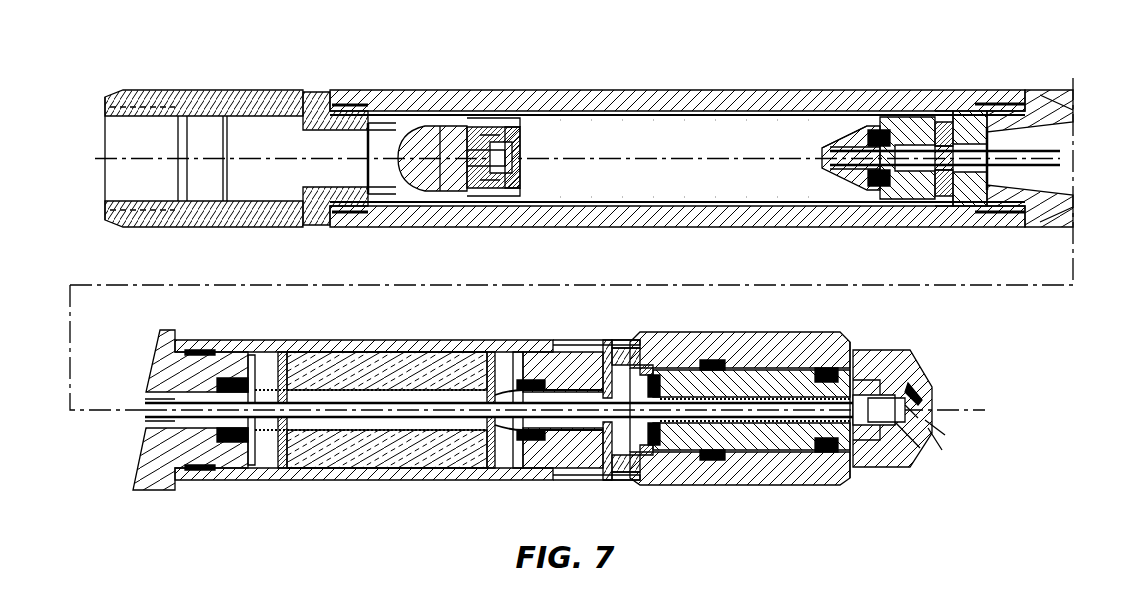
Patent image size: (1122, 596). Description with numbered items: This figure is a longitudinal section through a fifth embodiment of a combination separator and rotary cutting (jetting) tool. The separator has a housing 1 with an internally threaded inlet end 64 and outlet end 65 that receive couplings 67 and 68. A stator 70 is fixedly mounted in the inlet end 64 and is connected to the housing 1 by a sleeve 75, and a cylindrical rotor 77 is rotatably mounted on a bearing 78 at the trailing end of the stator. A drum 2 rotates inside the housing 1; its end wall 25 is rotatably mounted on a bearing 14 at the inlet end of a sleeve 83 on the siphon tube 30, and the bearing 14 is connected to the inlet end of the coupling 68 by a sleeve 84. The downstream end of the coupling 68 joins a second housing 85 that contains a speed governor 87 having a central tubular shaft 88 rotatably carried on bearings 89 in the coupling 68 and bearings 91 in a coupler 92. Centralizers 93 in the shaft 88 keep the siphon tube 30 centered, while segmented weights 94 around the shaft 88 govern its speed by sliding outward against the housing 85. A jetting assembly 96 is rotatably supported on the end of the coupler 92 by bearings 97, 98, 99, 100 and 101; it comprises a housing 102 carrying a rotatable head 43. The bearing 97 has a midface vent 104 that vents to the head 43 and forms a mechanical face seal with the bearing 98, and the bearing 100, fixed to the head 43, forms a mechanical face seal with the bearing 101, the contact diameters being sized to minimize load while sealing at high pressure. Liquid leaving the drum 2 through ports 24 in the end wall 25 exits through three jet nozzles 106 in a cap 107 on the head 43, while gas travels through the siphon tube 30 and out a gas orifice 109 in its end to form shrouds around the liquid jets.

The housing 1 is at (566, 90).
The drum 2 is at (637, 120).
The bearing 14 is at (862, 185).
The ports 24 is at (880, 130).
The end wall 25 is at (895, 120).
The siphon tube 30 is at (1015, 167).
The rotatable head 43 is at (792, 466).
The inlet end 64 is at (356, 98).
The outlet end 65 is at (972, 100).
The coupling 67 is at (233, 90).
The coupling 68 is at (1040, 95).
The stator 70 is at (420, 138).
The sleeve 75 is at (365, 165).
The rotor 77 is at (486, 127).
The bearing 78 is at (500, 190).
The sleeve 83 is at (946, 200).
The sleeve 84 is at (944, 122).
The second housing 85 is at (375, 340).
The speed governor 87 is at (432, 352).
The tubular shaft 88 is at (388, 440).
The bearings 89 is at (232, 378).
The bearings 91 is at (552, 442).
The coupler 92 is at (560, 352).
The centralizers 93 is at (284, 352).
The segmented weights 94 is at (406, 352).
The jetting assembly 96 is at (730, 498).
The bearing 97 is at (605, 345).
The bearing 98 is at (655, 375).
The bearing 99 is at (712, 360).
The bearing 100 is at (802, 370).
The bearing 101 is at (828, 368).
The housing 102 is at (830, 487).
The midface vent 104 is at (610, 482).
The jet nozzles 106 is at (930, 378).
The cap 107 is at (918, 356).
The gas orifice 109 is at (905, 452).